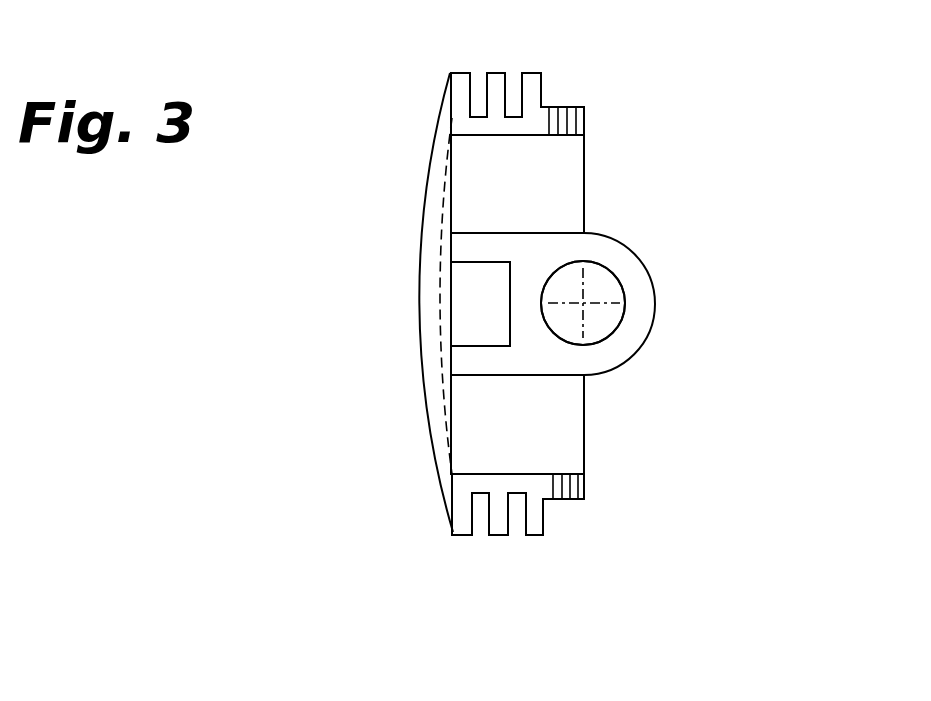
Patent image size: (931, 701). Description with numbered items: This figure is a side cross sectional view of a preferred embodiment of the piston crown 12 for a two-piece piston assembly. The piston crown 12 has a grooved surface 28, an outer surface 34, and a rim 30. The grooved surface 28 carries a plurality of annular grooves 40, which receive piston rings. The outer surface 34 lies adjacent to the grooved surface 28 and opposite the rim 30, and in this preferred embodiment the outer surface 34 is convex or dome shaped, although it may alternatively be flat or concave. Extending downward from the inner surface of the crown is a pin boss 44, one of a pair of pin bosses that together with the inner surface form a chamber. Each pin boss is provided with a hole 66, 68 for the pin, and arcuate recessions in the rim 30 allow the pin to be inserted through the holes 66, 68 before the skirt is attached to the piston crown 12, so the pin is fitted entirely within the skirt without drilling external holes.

The piston crown 12 is at (360, 148).
The grooved surface 28 is at (479, 546).
The rim 30 is at (578, 490).
The outer surface 34 is at (417, 300).
The annular grooves 40 is at (513, 117).
The pin boss 44 is at (630, 333).
The hole 66 is at (583, 303).
The hole 68 is at (583, 303).